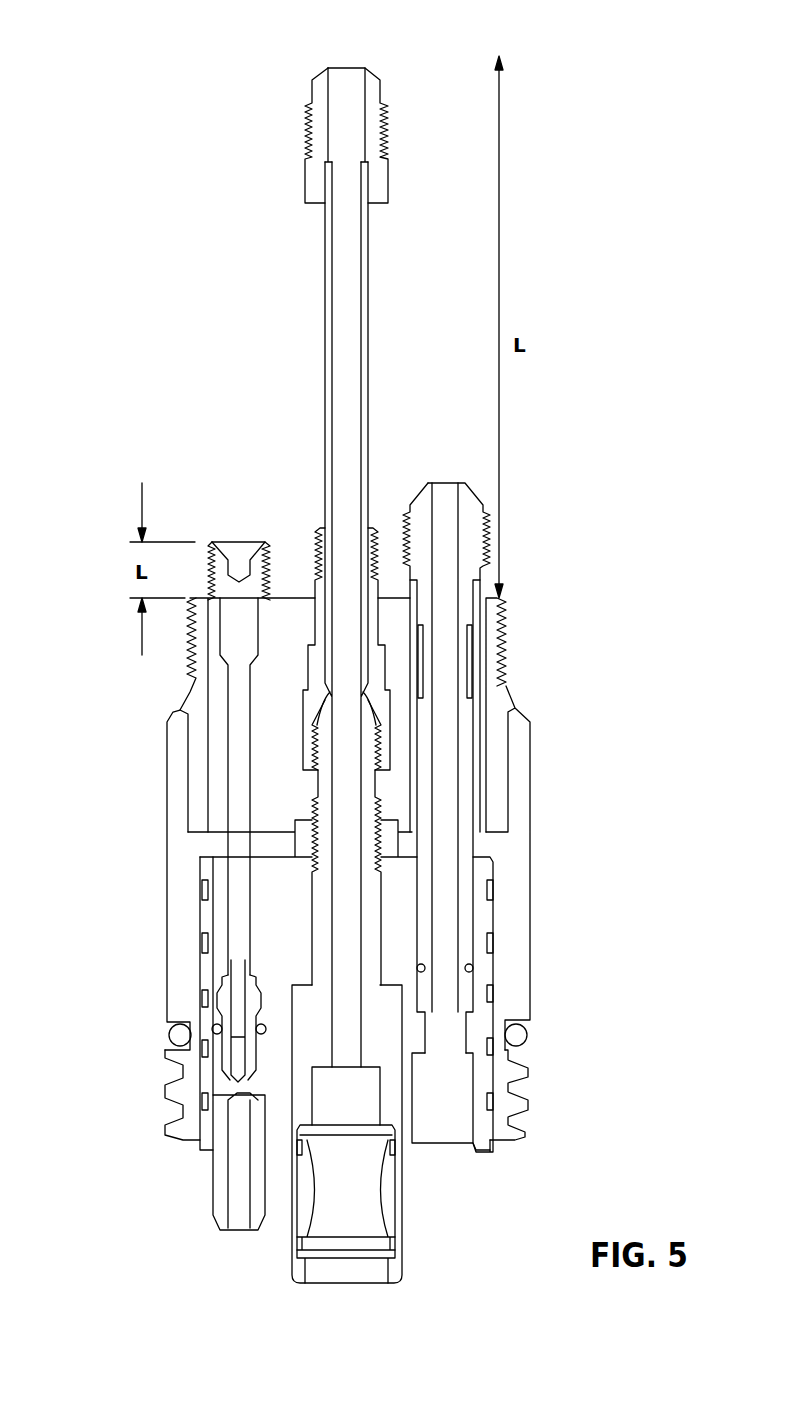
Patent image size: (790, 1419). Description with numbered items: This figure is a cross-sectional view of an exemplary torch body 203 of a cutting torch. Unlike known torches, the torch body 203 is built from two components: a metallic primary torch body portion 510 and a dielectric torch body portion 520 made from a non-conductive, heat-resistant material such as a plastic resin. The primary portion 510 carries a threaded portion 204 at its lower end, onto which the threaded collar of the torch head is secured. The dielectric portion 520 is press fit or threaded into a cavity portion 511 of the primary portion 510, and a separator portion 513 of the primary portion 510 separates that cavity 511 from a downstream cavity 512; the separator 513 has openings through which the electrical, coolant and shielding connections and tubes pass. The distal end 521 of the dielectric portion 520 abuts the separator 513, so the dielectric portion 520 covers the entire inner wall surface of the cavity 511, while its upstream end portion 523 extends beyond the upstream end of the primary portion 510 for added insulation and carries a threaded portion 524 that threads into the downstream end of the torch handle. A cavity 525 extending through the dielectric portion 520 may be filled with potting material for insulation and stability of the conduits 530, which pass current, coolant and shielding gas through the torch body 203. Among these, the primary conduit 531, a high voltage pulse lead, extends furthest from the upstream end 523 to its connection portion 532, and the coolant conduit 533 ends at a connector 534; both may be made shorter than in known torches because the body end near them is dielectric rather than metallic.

The torch body 203 is at (598, 565).
The threaded portion 204 is at (525, 1100).
The primary torch body portion 510 is at (530, 1020).
The cavity portion 511 is at (187, 768).
The downstream cavity 512 is at (202, 943).
The separator portion 513 is at (205, 847).
The dielectric torch body portion 520 is at (512, 632).
The distal end 521 is at (496, 830).
The upstream end portion 523 is at (508, 592).
The threaded portion 524 is at (187, 642).
The cavity 525 is at (272, 690).
The conduits 530 is at (362, 44).
The primary conduit 531 is at (208, 556).
The connection portion 532 is at (270, 560).
The coolant conduit 533 is at (368, 322).
The connector 534 is at (330, 68).